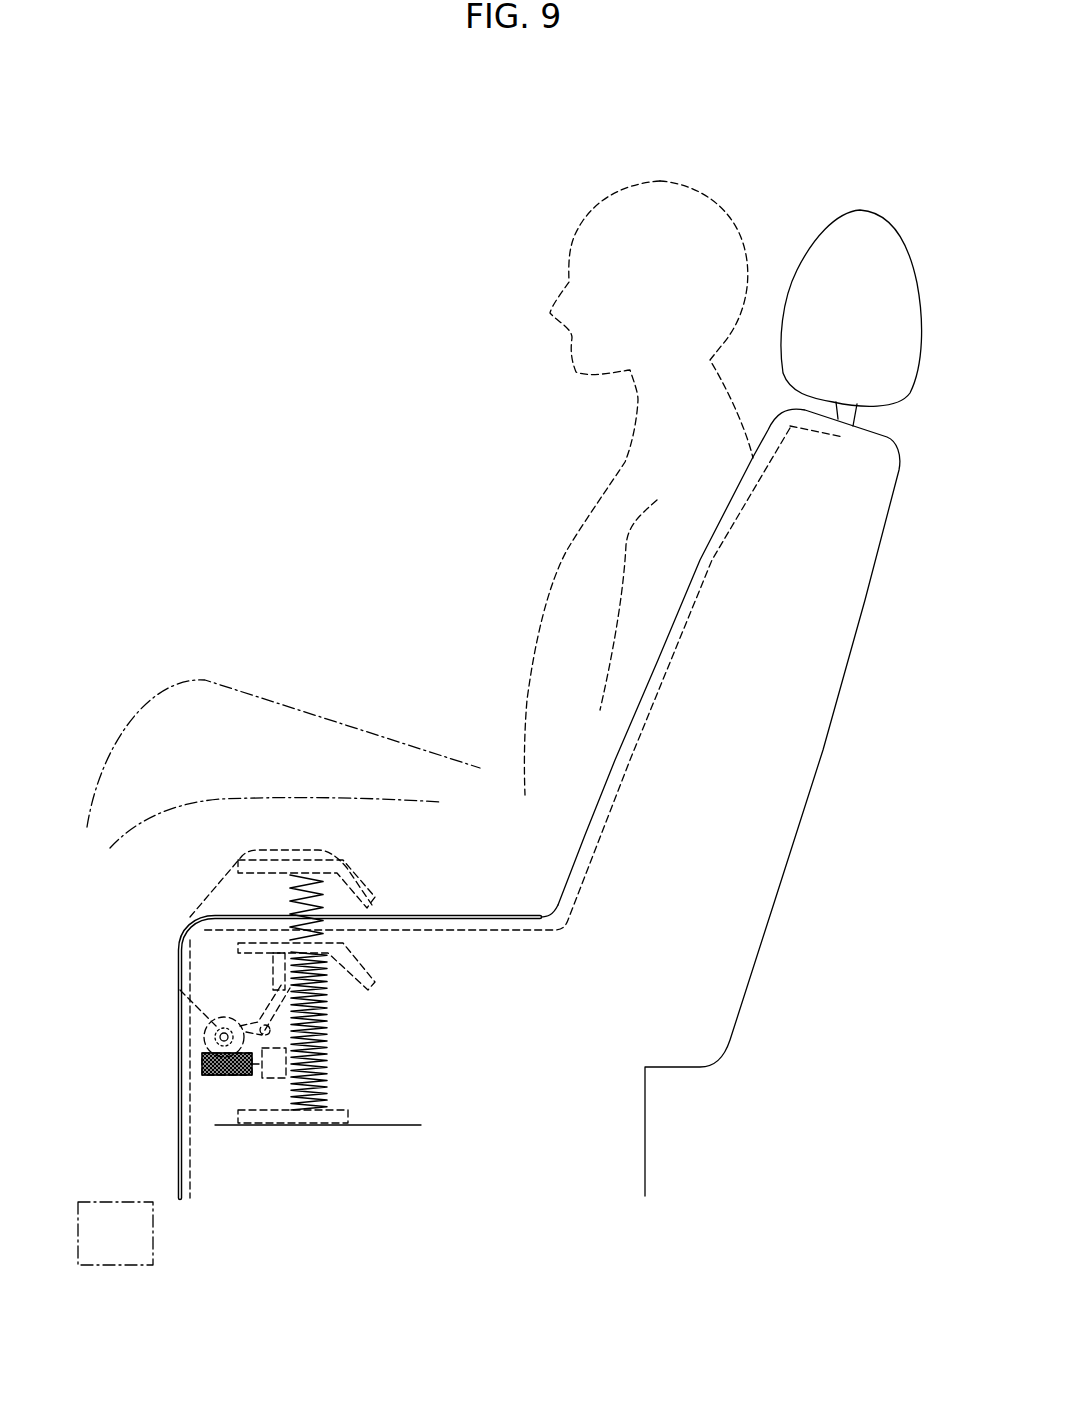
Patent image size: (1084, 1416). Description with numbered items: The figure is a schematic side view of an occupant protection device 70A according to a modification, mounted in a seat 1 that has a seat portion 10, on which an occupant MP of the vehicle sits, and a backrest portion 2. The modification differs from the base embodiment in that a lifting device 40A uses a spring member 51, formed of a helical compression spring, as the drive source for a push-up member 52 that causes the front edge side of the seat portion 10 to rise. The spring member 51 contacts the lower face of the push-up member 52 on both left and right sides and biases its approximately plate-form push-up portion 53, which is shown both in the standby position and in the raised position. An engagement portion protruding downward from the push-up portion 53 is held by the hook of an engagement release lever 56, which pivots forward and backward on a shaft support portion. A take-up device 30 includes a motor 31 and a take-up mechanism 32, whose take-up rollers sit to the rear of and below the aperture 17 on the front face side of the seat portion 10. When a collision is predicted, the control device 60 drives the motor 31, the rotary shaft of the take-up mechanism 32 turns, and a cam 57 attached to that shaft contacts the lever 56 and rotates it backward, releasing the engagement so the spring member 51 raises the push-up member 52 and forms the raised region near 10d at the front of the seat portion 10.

The occupant MP is at (518, 222).
The seat 1 is at (874, 942).
The backrest portion 2 is at (703, 873).
The seat portion 10 is at (520, 1077).
The front portion of seat cushion 10d is at (200, 878).
The push-up portion 53 is at (280, 870).
The push-up member 52 is at (362, 905).
The spring member 51 is at (300, 1112).
The lifting device 40A is at (333, 1070).
The cam 57 is at (207, 1043).
The engagement release lever 56 is at (258, 1017).
The take-up device 30 is at (218, 1085).
The take-up mechanism 32 is at (227, 1064).
The motor 31 is at (273, 1070).
The aperture 17 is at (165, 993).
The control device 60 is at (127, 1232).
The occupant protection device 70A is at (427, 1237).